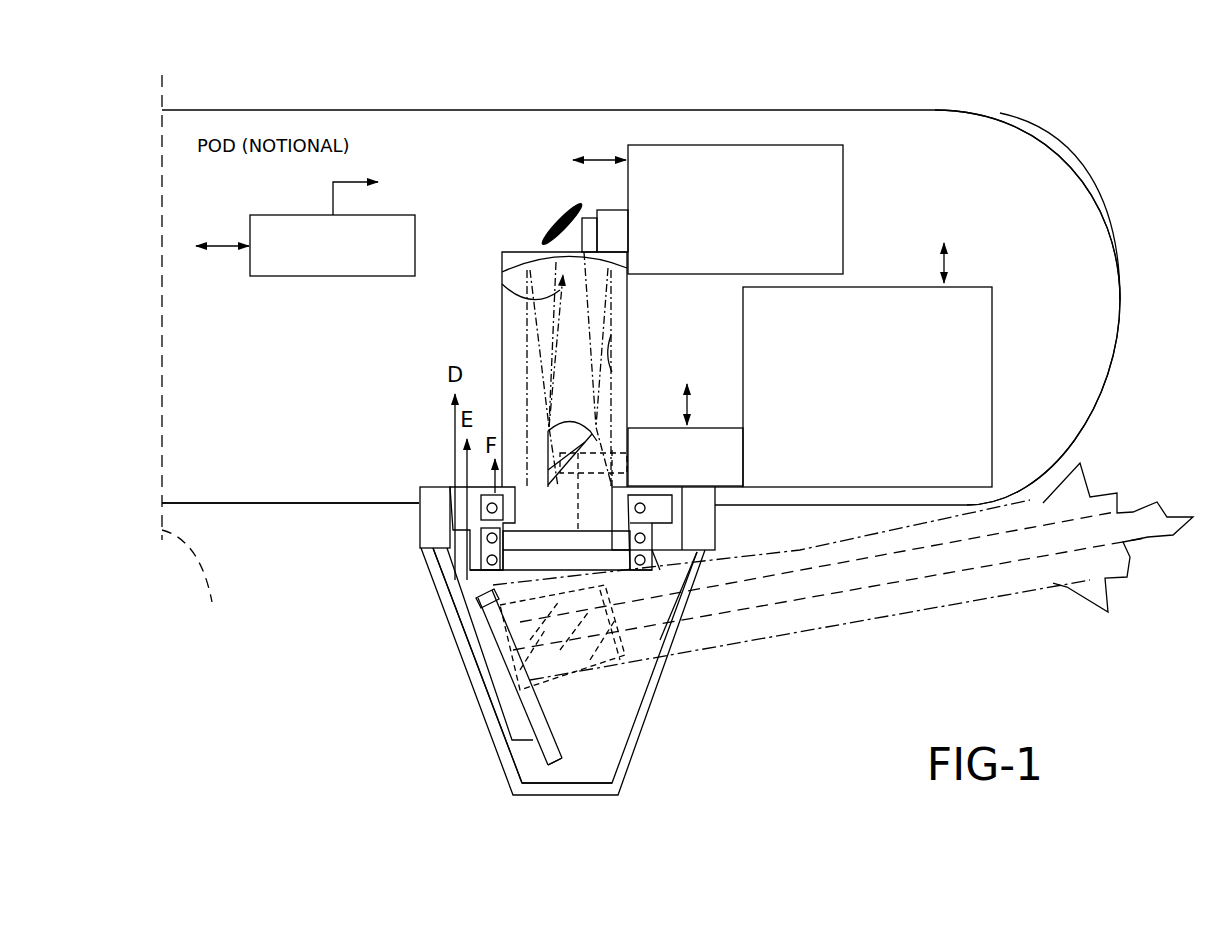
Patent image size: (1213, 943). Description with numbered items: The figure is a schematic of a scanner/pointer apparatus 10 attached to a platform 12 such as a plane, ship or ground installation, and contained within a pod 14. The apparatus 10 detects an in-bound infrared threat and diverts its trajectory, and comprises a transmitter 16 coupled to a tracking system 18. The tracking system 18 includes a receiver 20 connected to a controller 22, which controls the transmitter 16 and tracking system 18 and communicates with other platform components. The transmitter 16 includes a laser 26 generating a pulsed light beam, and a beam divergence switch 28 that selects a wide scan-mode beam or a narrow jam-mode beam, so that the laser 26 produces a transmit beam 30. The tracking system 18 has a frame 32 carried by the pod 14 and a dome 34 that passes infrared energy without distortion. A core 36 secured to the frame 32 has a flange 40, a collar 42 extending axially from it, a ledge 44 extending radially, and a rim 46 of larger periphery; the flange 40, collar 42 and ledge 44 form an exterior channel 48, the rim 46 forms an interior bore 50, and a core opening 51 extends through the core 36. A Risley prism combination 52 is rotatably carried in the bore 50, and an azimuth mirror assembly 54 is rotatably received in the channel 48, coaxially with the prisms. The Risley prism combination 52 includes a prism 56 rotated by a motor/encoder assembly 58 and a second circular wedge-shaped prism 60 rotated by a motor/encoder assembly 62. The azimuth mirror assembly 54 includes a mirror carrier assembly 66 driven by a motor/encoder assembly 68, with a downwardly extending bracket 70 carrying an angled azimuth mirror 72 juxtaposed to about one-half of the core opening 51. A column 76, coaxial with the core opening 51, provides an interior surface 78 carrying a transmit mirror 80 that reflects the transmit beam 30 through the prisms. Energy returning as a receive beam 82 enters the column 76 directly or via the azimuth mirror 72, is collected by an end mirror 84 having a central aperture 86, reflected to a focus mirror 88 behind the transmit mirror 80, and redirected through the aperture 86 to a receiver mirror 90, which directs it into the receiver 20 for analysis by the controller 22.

The scanner/pointer apparatus 10 is at (1113, 147).
The platform 12 is at (191, 580).
The pod 14 is at (1120, 290).
The transmitter 16 is at (1017, 256).
The tracking system 18 is at (368, 535).
The receiver 20 is at (845, 166).
The controller 22 is at (295, 277).
The laser 26 is at (996, 392).
The beam divergence switch 28 is at (705, 428).
The transmit beam 30 is at (1165, 518).
The frame 32 is at (705, 532).
The dome 34 is at (637, 750).
The core 36 is at (657, 553).
The flange 40 is at (672, 497).
The collar 42 is at (643, 590).
The ledge 44 is at (645, 527).
The rim 46 is at (662, 550).
The channel 48 is at (650, 515).
The interior bore 50 is at (603, 600).
The core opening 51 is at (660, 590).
The Risley prism combination 52 is at (503, 590).
The azimuth mirror assembly 54 is at (528, 755).
The prism 56 is at (490, 608).
The motor/encoder assembly 58 is at (487, 572).
The second circular wedge-shaped prism 60 is at (535, 545).
The motor/encoder assembly 62 is at (478, 538).
The mirror carrier assembly 66 is at (500, 718).
The motor/encoder assembly 68 is at (487, 500).
The bracket 70 is at (490, 655).
The azimuth mirror 72 is at (555, 757).
The column 76 is at (500, 337).
The interior surface 78 is at (612, 340).
The transmit mirror 80 is at (613, 430).
The receive beam 82 is at (987, 587).
The end mirror 84 is at (522, 268).
The central aperture 86 is at (503, 287).
The focus mirror 88 is at (575, 427).
The receiver mirror 90 is at (575, 212).